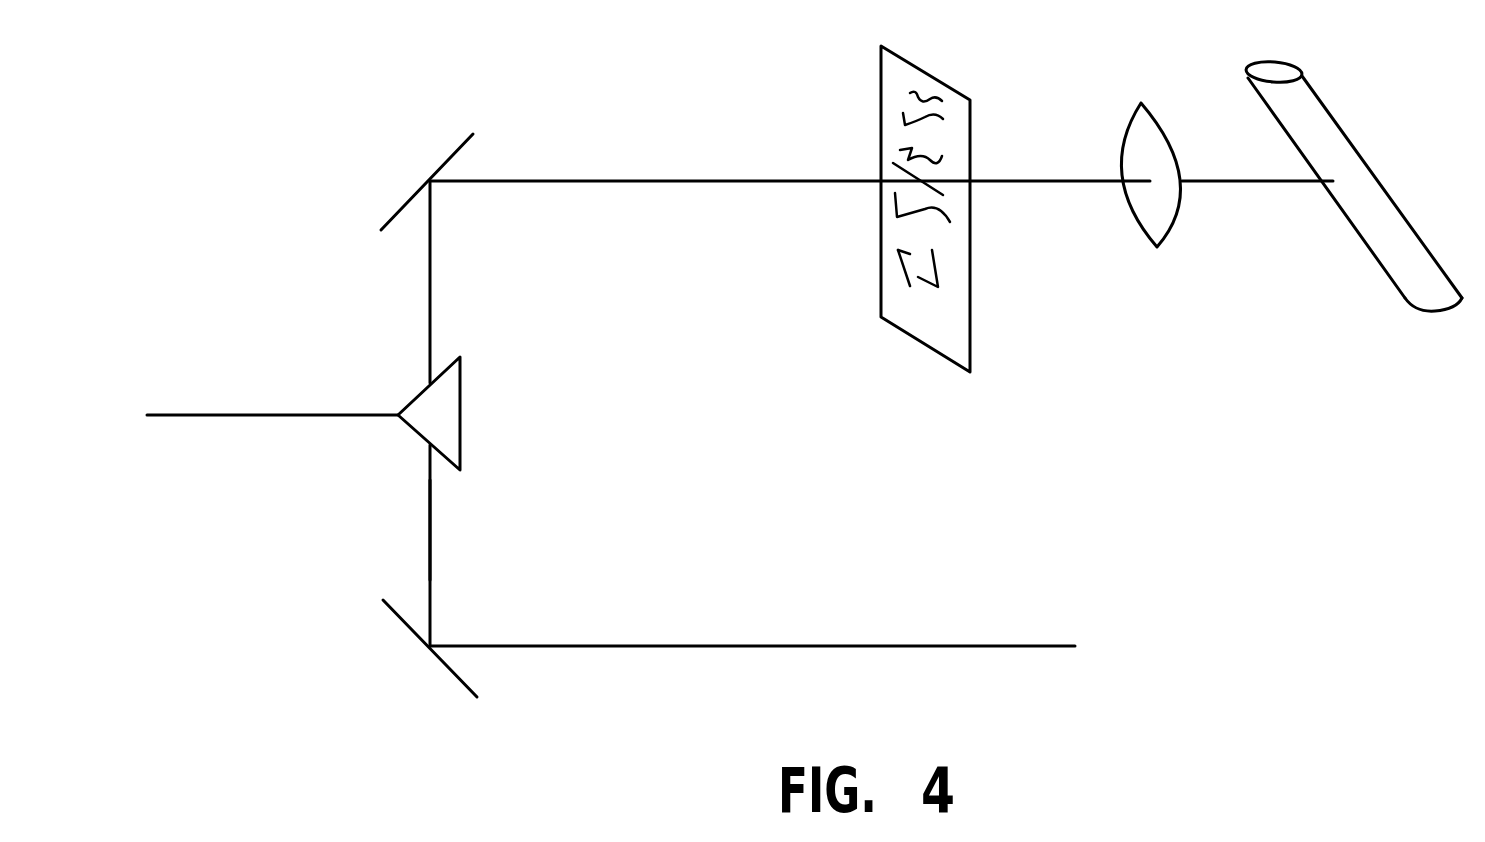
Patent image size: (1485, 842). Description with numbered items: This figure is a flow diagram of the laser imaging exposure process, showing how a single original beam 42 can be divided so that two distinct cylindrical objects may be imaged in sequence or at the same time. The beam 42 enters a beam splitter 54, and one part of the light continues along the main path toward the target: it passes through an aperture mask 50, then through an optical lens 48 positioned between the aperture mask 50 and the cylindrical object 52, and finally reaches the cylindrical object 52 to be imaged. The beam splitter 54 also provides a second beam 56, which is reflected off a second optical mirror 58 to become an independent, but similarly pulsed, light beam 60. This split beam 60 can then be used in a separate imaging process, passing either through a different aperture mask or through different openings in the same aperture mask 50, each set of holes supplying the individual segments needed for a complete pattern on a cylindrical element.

The beam 42 is at (272, 412).
The optical lens 48 is at (1174, 222).
The aperture mask 50 is at (972, 312).
The cylindrical object 52 is at (1357, 145).
The beam splitter 54 is at (462, 410).
The second beam 56 is at (432, 532).
The second optical mirror 58 is at (451, 672).
The pulsed light beam 60 is at (805, 642).